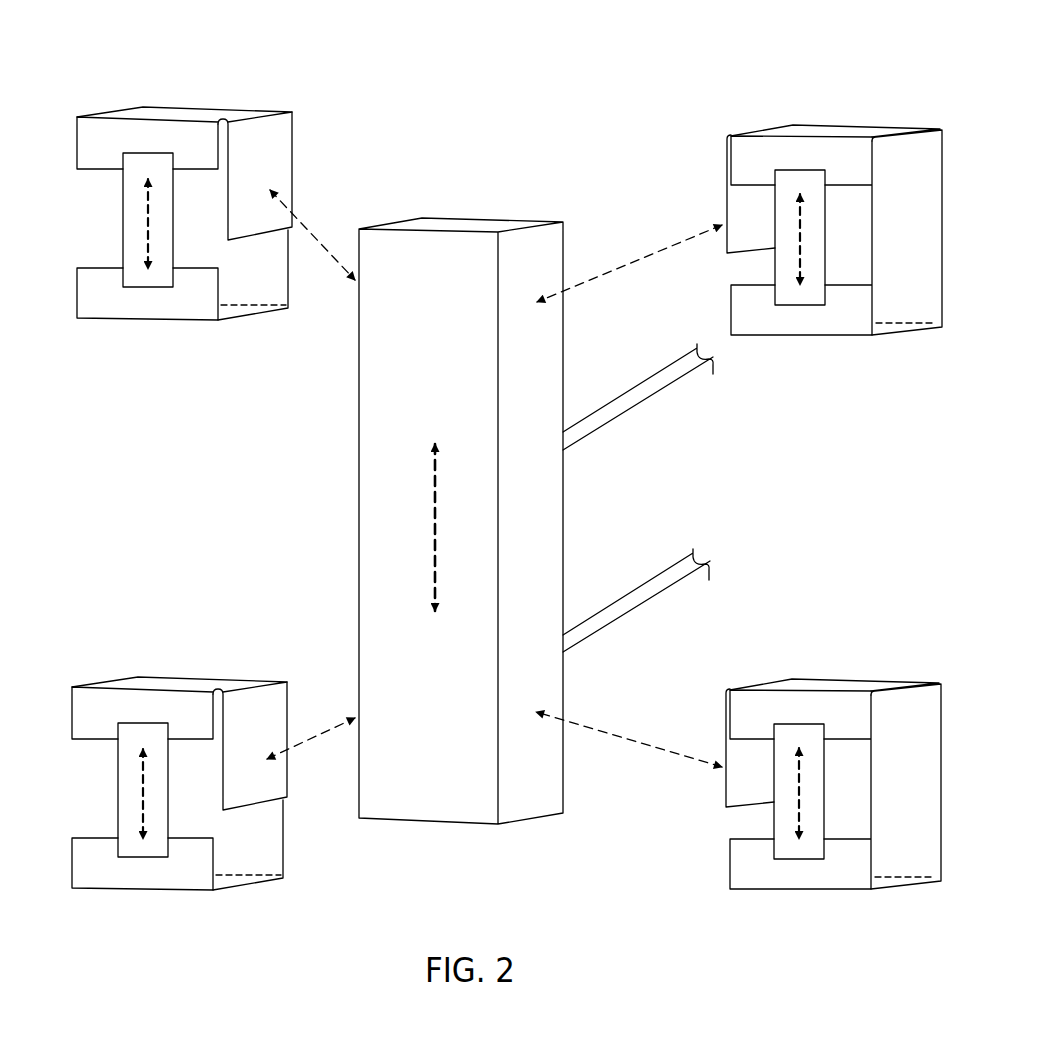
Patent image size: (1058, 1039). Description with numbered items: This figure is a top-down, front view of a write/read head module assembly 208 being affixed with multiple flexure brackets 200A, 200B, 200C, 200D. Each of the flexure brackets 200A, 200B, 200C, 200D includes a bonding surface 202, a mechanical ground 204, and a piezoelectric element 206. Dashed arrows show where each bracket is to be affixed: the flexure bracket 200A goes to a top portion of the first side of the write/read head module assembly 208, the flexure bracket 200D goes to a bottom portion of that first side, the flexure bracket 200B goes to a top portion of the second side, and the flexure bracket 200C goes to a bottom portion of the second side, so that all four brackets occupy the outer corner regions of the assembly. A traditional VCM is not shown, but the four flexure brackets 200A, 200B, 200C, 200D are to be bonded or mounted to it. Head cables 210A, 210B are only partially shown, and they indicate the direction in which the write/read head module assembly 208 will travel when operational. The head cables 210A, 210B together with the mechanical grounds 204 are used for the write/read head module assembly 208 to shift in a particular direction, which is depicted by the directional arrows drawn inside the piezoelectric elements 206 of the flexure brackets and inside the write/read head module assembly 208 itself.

The flexure bracket 200A is at (121, 89).
The flexure bracket 200B is at (773, 104).
The flexure bracket 200C is at (874, 650).
The flexure bracket 200D is at (115, 657).
The bonding surface 202 is at (270, 157).
The mechanical ground 204 is at (185, 321).
The piezoelectric element 206 is at (122, 218).
The write/read head module assembly 208 is at (358, 494).
The head cable 210A is at (657, 394).
The head cable 210B is at (668, 589).